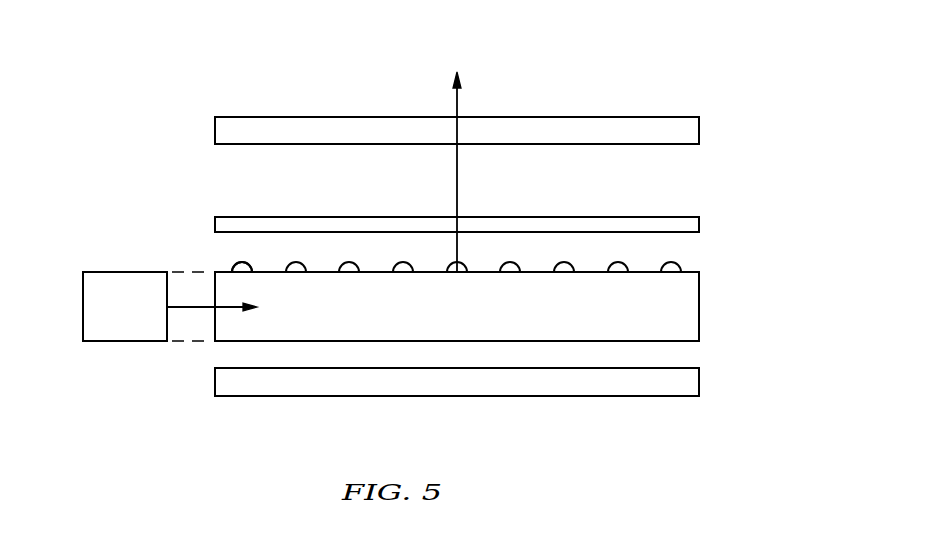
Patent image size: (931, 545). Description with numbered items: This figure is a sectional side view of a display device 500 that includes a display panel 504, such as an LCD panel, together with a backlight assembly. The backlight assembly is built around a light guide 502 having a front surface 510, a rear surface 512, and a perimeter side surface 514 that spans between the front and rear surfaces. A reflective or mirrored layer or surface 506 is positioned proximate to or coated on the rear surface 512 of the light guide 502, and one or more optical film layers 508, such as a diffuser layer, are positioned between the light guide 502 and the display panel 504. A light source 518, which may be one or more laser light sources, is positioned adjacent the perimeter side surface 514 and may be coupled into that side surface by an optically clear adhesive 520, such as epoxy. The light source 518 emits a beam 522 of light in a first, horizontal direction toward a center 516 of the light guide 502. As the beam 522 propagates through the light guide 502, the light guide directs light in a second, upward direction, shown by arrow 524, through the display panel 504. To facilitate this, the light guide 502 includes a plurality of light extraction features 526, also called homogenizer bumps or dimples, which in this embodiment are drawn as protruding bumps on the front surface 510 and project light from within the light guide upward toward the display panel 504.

The display device 500 is at (718, 72).
The light guide 502 is at (713, 299).
The display panel 504 is at (700, 123).
The reflective or mirrored layer or surface 506 is at (700, 378).
The optical film layers 508 is at (700, 225).
The front surface 510 is at (595, 268).
The rear surface 512 is at (658, 342).
The perimeter side surface 514 is at (215, 320).
The center 516 is at (457, 306).
The light source 518 is at (103, 309).
The optically clear adhesive 520 is at (185, 287).
The beam 522 is at (227, 308).
The arrow 524 is at (460, 105).
The light extraction features 526 is at (237, 267).